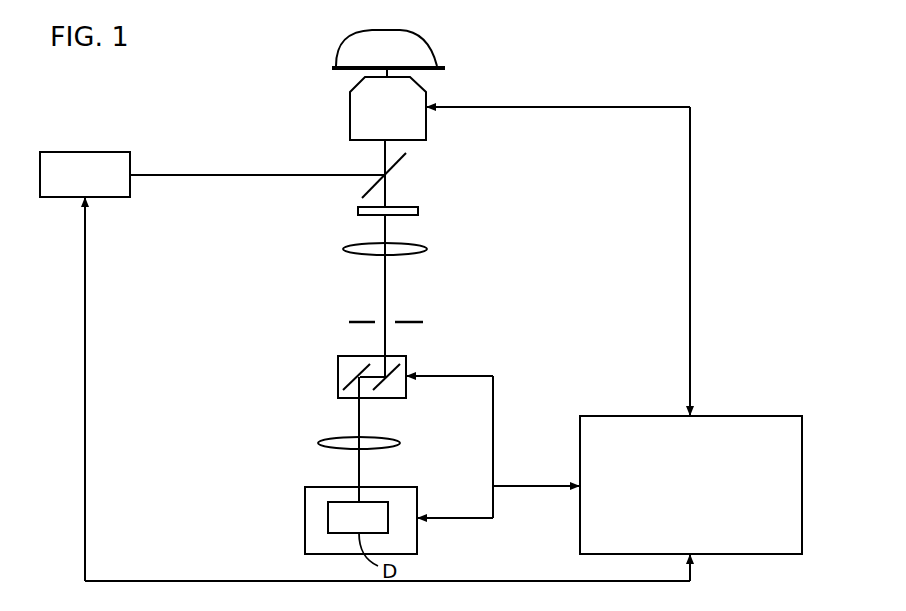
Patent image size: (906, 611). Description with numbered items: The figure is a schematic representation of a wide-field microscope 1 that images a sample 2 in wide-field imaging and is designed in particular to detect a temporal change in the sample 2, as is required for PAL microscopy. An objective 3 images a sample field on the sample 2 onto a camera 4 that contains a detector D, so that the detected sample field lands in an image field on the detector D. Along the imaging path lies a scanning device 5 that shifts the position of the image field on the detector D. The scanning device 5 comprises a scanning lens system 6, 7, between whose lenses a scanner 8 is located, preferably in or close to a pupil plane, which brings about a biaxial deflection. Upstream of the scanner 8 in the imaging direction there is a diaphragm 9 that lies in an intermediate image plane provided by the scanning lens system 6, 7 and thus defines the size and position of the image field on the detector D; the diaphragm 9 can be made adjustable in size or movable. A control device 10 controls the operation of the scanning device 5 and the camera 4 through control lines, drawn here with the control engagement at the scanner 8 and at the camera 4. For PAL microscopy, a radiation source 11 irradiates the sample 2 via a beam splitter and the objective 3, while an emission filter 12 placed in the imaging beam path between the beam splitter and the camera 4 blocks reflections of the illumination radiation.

The microscope 1 is at (752, 189).
The sample 2 is at (432, 45).
The objective 3 is at (427, 125).
The camera 4 is at (305, 522).
The scanning device 5 is at (300, 248).
The scanning lens system 6 is at (427, 251).
The scanning lens system 7 is at (400, 441).
The scanner 8 is at (406, 359).
The diaphragm 9 is at (412, 322).
The control device 10 is at (735, 415).
The radiation source 11 is at (92, 152).
The emission filter 12 is at (412, 207).